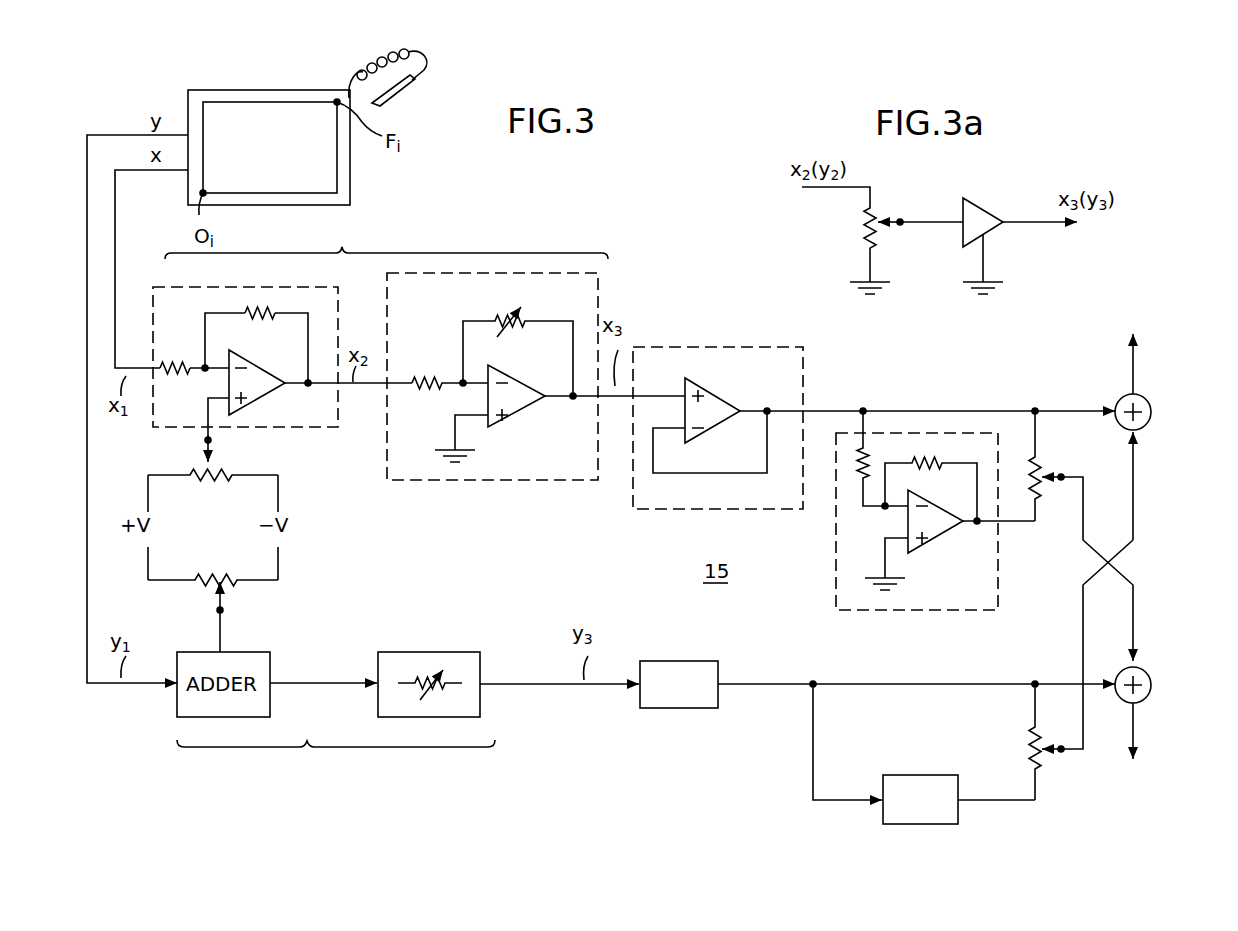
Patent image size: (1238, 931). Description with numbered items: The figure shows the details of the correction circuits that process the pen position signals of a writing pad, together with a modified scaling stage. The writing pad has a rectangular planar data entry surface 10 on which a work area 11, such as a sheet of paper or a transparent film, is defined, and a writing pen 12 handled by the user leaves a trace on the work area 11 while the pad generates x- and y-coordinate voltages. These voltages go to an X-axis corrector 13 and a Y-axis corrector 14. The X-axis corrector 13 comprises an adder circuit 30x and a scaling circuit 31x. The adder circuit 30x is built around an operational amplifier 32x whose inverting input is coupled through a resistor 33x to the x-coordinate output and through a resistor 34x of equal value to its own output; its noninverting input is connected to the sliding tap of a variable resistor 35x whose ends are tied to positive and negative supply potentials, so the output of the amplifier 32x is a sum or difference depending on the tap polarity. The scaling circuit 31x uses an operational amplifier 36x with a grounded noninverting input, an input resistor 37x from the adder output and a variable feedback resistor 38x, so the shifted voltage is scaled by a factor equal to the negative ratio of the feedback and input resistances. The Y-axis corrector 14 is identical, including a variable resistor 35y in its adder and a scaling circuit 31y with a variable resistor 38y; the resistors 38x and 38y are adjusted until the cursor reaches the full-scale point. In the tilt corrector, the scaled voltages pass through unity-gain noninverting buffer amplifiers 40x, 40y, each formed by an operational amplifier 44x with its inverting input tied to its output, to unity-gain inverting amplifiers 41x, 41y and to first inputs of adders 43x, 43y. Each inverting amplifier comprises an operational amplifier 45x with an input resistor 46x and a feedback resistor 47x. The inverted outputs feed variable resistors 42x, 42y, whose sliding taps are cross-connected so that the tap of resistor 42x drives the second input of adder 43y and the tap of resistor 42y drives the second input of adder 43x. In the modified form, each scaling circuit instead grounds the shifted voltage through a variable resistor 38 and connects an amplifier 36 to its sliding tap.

In FIG. 3, the data entry surface 10 is at (350, 185).
In FIG. 3, the work area 11 is at (280, 102).
In FIG. 3, the writing pen 12 is at (400, 90).
In FIG. 3, the X-axis corrector 13 is at (386, 241).
In FIG. 3, the Y-axis corrector 14 is at (336, 761).
In FIG. 3, the adder circuit 30x is at (313, 427).
In FIG. 3, the scaling circuit 31x is at (455, 480).
In FIG. 3, the scaling circuit 31y is at (406, 650).
In FIG. 3, the operational amplifier 32x is at (265, 398).
In FIG. 3, the resistor 33x is at (171, 365).
In FIG. 3, the resistor 34x is at (260, 330).
In FIG. 3, the variable resistor 35x is at (226, 472).
In FIG. 3, the variable resistor 35y is at (217, 578).
In FIG. 3, the operational amplifier 36x is at (524, 410).
In FIG. 3, the resistor 37x is at (419, 378).
In FIG. 3, the variable resistor 38x is at (500, 312).
In FIG. 3, the variable resistor 38y is at (448, 664).
In FIG. 3, the unity-gain noninverting buffer amplifier 40x is at (718, 346).
In FIG. 3, the unity-gain noninverting buffer amplifier 40y is at (684, 661).
In FIG. 3, the unity-gain inverting amplifier 41x is at (924, 432).
In FIG. 3, the unity-gain inverting amplifier 41y is at (912, 774).
In FIG. 3, the variable resistor 42x is at (1040, 458).
In FIG. 3, the variable resistor 42y is at (1032, 758).
In FIG. 3, the adder 43x is at (1151, 410).
In FIG. 3, the adder 43y is at (1147, 673).
In FIG. 3, the operational amplifier 44x is at (705, 392).
In FIG. 3, the operational amplifier 45x is at (935, 540).
In FIG. 3, the resistor 46x is at (858, 462).
In FIG. 3, the feedback resistor 47x is at (930, 468).
In FIG. 3A, the amplifier 36 is at (985, 203).
In FIG. 3A, the variable resistor 38 is at (862, 239).